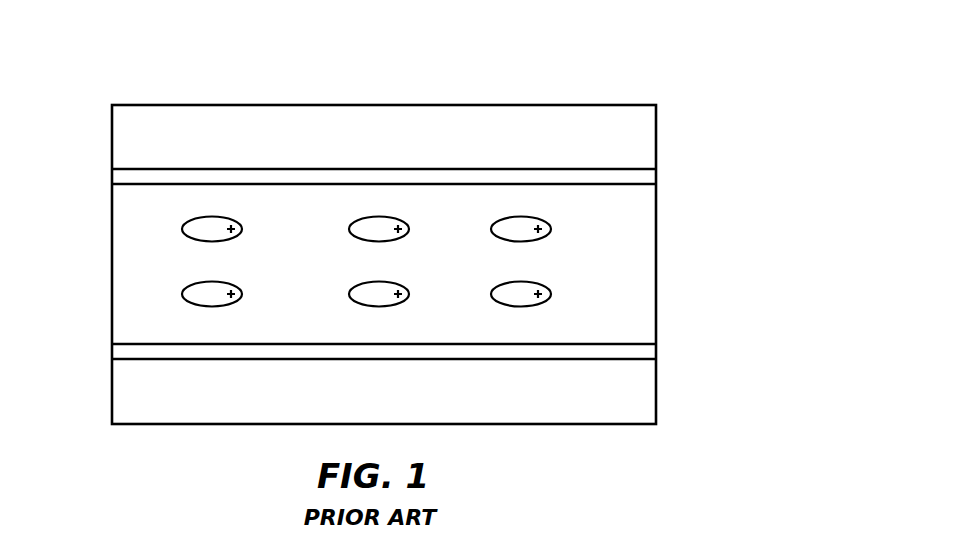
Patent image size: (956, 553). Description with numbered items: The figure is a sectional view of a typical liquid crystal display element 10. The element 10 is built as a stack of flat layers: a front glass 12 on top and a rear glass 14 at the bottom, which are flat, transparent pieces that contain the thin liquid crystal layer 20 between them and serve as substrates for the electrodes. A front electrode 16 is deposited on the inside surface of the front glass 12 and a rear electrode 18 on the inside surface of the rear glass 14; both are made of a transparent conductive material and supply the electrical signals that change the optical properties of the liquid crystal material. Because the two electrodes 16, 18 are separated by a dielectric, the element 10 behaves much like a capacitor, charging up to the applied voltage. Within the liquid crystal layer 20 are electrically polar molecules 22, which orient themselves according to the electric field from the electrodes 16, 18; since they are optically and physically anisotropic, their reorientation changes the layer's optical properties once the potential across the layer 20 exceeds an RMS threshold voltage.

The liquid crystal display element 10 is at (628, 82).
The front glass 12 is at (657, 140).
The rear glass 14 is at (657, 391).
The front electrode 16 is at (657, 172).
The rear electrode 18 is at (657, 350).
The liquid crystal layer 20 is at (657, 245).
The electrically polar molecules 22 is at (182, 294).